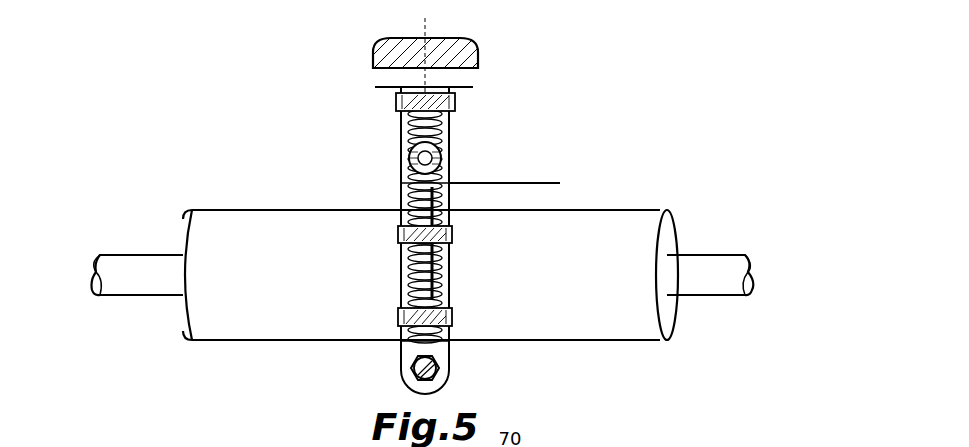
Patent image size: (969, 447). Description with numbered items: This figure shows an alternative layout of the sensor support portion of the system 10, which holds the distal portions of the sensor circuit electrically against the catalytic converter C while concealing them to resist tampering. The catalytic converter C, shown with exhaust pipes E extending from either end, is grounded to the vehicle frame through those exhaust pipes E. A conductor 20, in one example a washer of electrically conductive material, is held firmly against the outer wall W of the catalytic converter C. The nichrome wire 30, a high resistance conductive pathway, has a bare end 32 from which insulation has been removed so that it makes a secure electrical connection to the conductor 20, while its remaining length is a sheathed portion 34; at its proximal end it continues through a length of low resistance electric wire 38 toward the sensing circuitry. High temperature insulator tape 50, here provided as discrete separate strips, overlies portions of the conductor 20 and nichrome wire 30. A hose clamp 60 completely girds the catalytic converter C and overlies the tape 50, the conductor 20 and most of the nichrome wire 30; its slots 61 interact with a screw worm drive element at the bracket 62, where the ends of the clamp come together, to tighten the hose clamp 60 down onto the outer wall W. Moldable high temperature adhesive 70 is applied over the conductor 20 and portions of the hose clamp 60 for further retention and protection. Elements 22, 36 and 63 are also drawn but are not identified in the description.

The system 10 is at (540, 84).
The conductor 20 is at (450, 148).
The eyelet ring 22 is at (408, 158).
The nichrome wire 30 is at (485, 182).
The bare end 32 is at (405, 185).
The sheathed portion 34 is at (523, 182).
The bolt shank 36 is at (442, 270).
The low resistance electric wire 38 is at (553, 182).
The high temperature insulator tape 50 is at (398, 103).
The hose clamp 60 is at (400, 134).
The slots 61 is at (445, 336).
The bracket 62 is at (450, 370).
The bolt head 63 is at (407, 368).
The moldable high temperature adhesive 70 is at (410, 40).
The outer wall W is at (255, 210).
The exhaust pipes E is at (138, 262).
The catalytic converter C is at (430, 275).